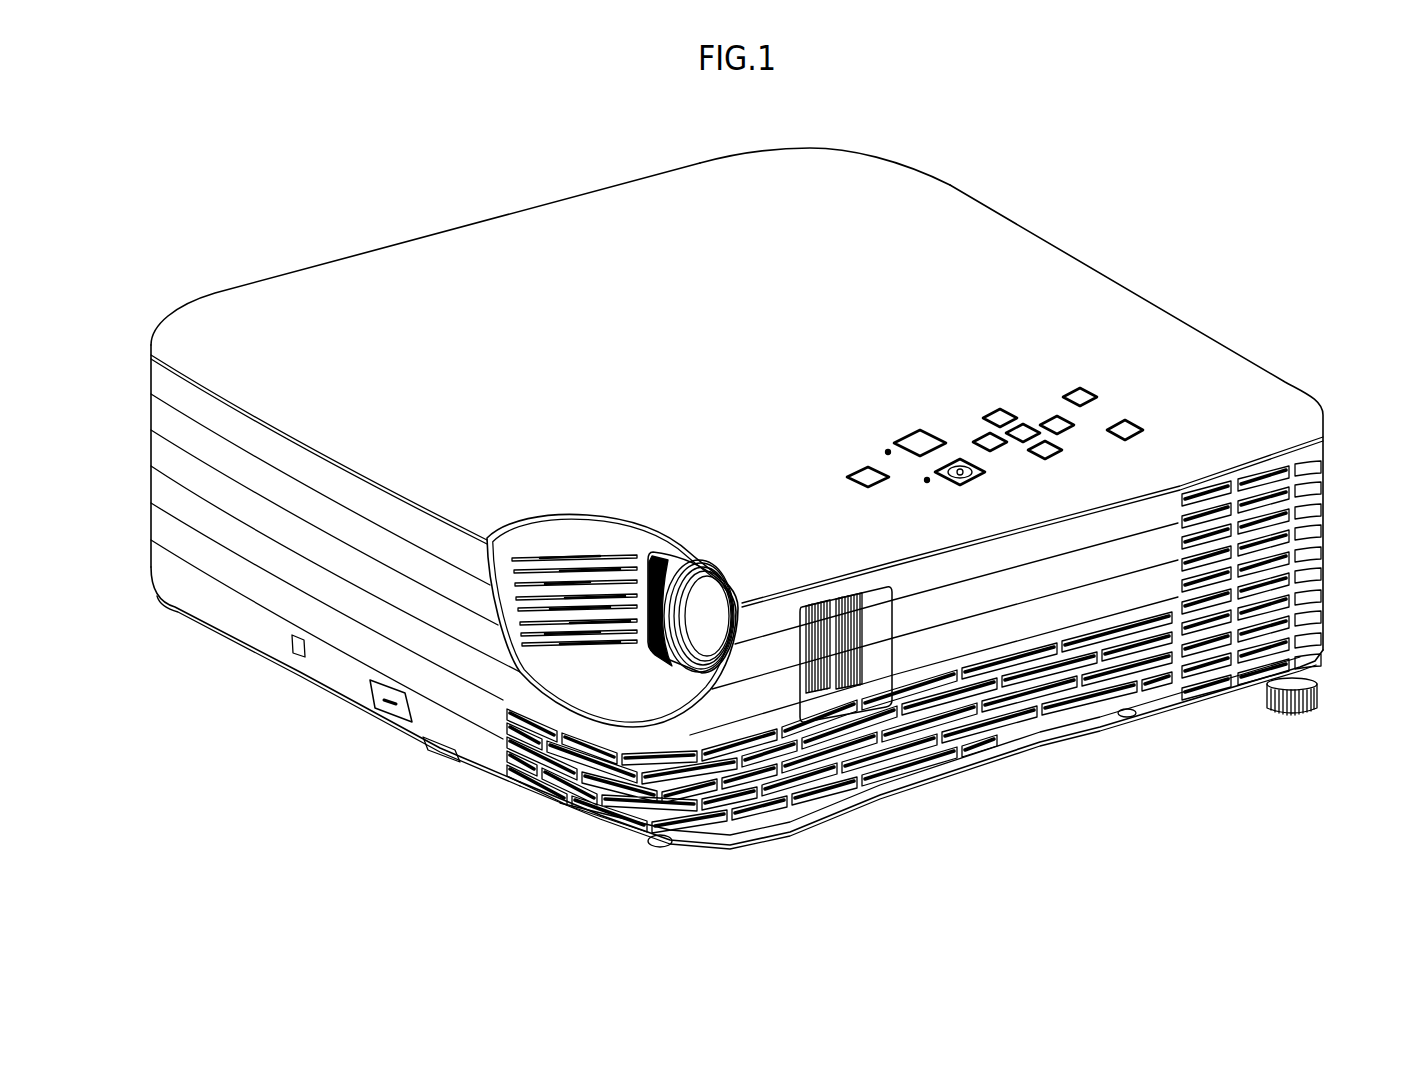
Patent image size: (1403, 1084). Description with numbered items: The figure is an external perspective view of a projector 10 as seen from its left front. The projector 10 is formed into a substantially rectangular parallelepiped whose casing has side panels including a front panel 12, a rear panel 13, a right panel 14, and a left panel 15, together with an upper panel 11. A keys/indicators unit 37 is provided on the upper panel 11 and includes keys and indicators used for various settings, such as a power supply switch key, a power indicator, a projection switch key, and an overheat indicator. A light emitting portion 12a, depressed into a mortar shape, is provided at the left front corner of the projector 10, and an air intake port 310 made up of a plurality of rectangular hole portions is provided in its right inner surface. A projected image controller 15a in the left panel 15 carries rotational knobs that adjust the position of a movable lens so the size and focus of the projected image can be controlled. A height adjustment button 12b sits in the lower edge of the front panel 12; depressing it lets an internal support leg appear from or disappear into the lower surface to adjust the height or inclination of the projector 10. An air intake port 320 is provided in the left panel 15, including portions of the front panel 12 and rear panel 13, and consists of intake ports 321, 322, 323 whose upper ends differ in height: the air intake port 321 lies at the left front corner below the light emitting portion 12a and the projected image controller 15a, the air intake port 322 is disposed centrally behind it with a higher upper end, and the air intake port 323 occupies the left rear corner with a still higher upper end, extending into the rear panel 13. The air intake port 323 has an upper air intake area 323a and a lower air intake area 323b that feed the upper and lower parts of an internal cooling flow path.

The projector 10 is at (255, 224).
The upper panel 11 is at (612, 277).
The front panel 12 is at (300, 537).
The light emitting portion 12a is at (625, 705).
The height adjustment button 12b is at (403, 710).
The rear panel 13 is at (1177, 307).
The right panel 14 is at (437, 233).
The left panel 15 is at (968, 632).
The projected image controller 15a is at (846, 702).
The keys/indicators unit 37 is at (1021, 376).
The air intake port 310 is at (558, 643).
The air intake port 320 is at (931, 609).
The air intake port 321 is at (748, 812).
The air intake port 322 is at (1057, 657).
The air intake port 323 is at (1193, 692).
The upper air intake area 323a is at (1250, 463).
The lower air intake area 323b is at (1249, 684).